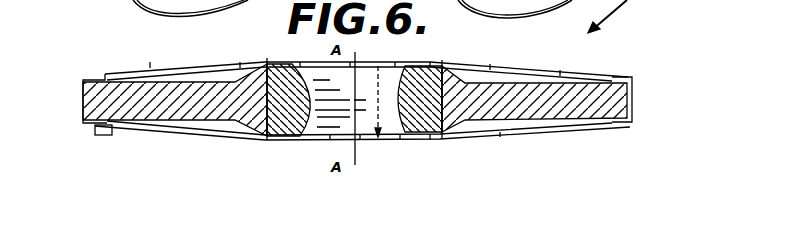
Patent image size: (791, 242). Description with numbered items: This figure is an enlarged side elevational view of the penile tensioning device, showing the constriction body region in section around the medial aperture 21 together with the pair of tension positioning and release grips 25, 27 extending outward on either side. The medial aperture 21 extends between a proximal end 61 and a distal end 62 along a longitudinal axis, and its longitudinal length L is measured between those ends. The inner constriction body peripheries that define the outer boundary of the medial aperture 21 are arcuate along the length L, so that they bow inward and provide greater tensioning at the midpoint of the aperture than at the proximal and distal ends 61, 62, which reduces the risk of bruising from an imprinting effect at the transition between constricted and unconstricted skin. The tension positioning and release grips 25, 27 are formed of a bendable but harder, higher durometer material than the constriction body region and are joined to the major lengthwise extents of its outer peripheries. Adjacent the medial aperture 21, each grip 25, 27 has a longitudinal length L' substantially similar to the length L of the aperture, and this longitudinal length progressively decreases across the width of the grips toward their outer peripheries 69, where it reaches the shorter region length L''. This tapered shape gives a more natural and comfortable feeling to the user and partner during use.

The medial aperture 21 is at (427, 62).
The tension positioning and release grip 25 is at (107, 78).
The tension positioning and release grip 27 is at (628, 77).
The proximal end 61 is at (320, 62).
The distal end 62 is at (393, 147).
The outer peripheries of the grips 69 is at (83, 98).
The longitudinal length L is at (404, 126).
The longitudinal length of the grips L' is at (236, 154).
The region length L'' is at (68, 155).